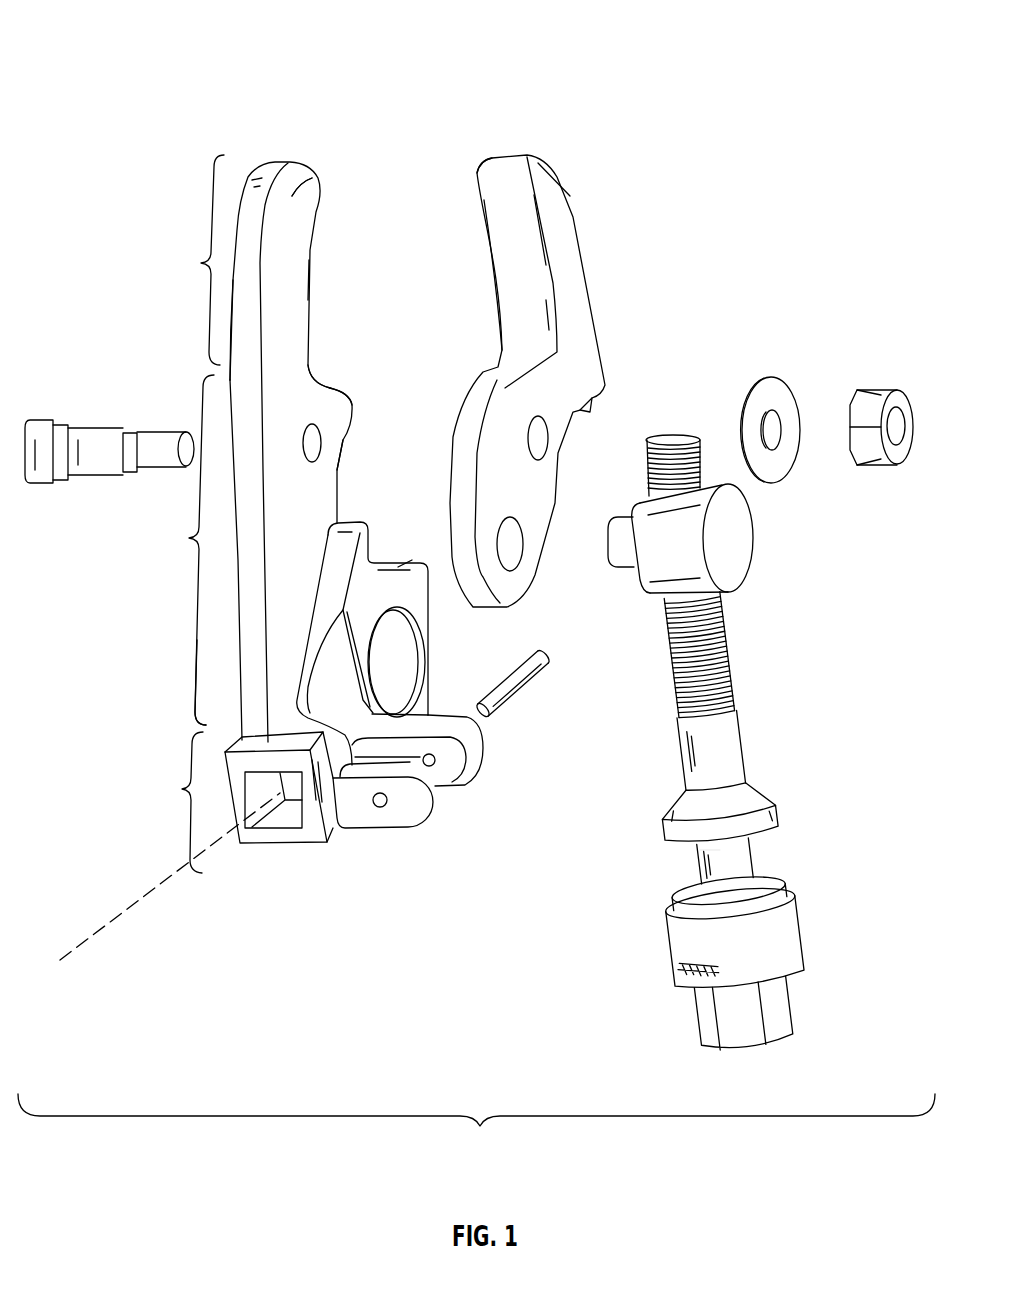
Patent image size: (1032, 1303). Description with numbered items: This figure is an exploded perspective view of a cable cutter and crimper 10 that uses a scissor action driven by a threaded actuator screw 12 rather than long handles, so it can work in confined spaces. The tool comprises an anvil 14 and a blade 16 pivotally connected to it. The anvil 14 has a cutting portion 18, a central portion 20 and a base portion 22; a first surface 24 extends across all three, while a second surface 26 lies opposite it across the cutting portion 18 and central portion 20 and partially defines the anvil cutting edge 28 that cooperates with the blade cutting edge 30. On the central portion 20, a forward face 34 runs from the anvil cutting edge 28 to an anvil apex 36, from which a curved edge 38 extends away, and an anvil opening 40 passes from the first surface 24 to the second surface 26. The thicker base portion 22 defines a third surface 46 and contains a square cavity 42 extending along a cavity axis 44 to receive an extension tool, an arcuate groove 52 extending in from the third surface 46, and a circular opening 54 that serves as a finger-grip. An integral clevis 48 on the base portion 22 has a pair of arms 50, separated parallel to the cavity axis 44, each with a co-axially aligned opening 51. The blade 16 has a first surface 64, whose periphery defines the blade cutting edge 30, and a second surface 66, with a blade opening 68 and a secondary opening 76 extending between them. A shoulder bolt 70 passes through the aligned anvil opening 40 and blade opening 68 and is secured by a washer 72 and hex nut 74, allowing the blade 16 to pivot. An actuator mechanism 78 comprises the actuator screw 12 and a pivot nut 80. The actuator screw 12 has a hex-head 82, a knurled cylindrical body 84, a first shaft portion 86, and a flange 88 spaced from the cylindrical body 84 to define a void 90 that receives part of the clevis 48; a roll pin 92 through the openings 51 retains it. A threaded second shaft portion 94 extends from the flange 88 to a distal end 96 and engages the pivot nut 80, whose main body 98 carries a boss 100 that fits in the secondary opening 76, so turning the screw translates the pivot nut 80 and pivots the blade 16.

The cable cutter and crimper 10 is at (476, 1129).
The actuator screw 12 is at (751, 821).
The anvil 14 is at (268, 133).
The blade 16 is at (553, 110).
The cutting portion 18 is at (199, 260).
The central portion 20 is at (189, 550).
The base portion 22 is at (244, 802).
The first surface 24 is at (249, 176).
The second surface 26 is at (296, 195).
The anvil cutting edge 28 is at (308, 273).
The blade cutting edge 30 is at (491, 247).
The forward face 34 is at (330, 382).
The anvil apex 36 is at (352, 397).
The curved edge 38 is at (339, 462).
The anvil opening 40 is at (316, 443).
The cavity 42 is at (287, 818).
The cavity axis 44 is at (127, 905).
The third surface 46 is at (428, 610).
The integral clevis 48 is at (441, 816).
The arms 50 is at (484, 748).
The opening 51 is at (440, 762).
The arcuate groove 52 is at (180, 682).
The opening 54 is at (410, 681).
The first surface 64 is at (477, 208).
The second surface 66 is at (568, 205).
The blade opening 68 is at (546, 445).
The shoulder bolt 70 is at (90, 467).
The washer 72 is at (785, 406).
The hex nut 74 is at (897, 391).
The secondary opening 76 is at (518, 548).
The actuator mechanism 78 is at (751, 821).
The pivot nut 80 is at (725, 480).
The hex-head 82 is at (743, 1014).
The cylindrical body 84 is at (734, 932).
The first shaft portion 86 is at (725, 861).
The flange 88 is at (719, 813).
The void 90 is at (781, 840).
The roll pin 92 is at (548, 661).
The second shaft portion 94 is at (699, 655).
The distal end 96 is at (673, 438).
The main body 98 is at (742, 522).
The boss 100 is at (610, 546).